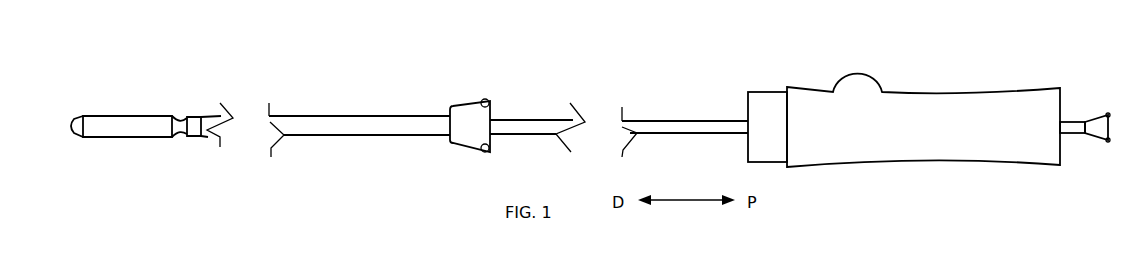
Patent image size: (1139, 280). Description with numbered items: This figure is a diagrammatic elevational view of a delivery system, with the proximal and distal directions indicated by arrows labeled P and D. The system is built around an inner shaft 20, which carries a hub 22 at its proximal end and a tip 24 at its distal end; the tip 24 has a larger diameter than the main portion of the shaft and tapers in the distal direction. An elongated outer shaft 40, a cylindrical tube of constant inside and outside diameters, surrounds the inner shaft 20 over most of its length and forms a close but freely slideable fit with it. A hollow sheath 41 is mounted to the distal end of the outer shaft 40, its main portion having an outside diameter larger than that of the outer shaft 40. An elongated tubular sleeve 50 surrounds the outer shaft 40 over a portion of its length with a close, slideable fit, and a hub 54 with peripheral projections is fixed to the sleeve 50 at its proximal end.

The inner shaft 20 is at (1070, 118).
The hub 22 is at (1105, 138).
The tip 24 is at (73, 138).
The outer shaft 40 is at (668, 120).
The sheath 41 is at (140, 100).
The sleeve 50 is at (347, 100).
The hub 54 is at (483, 100).